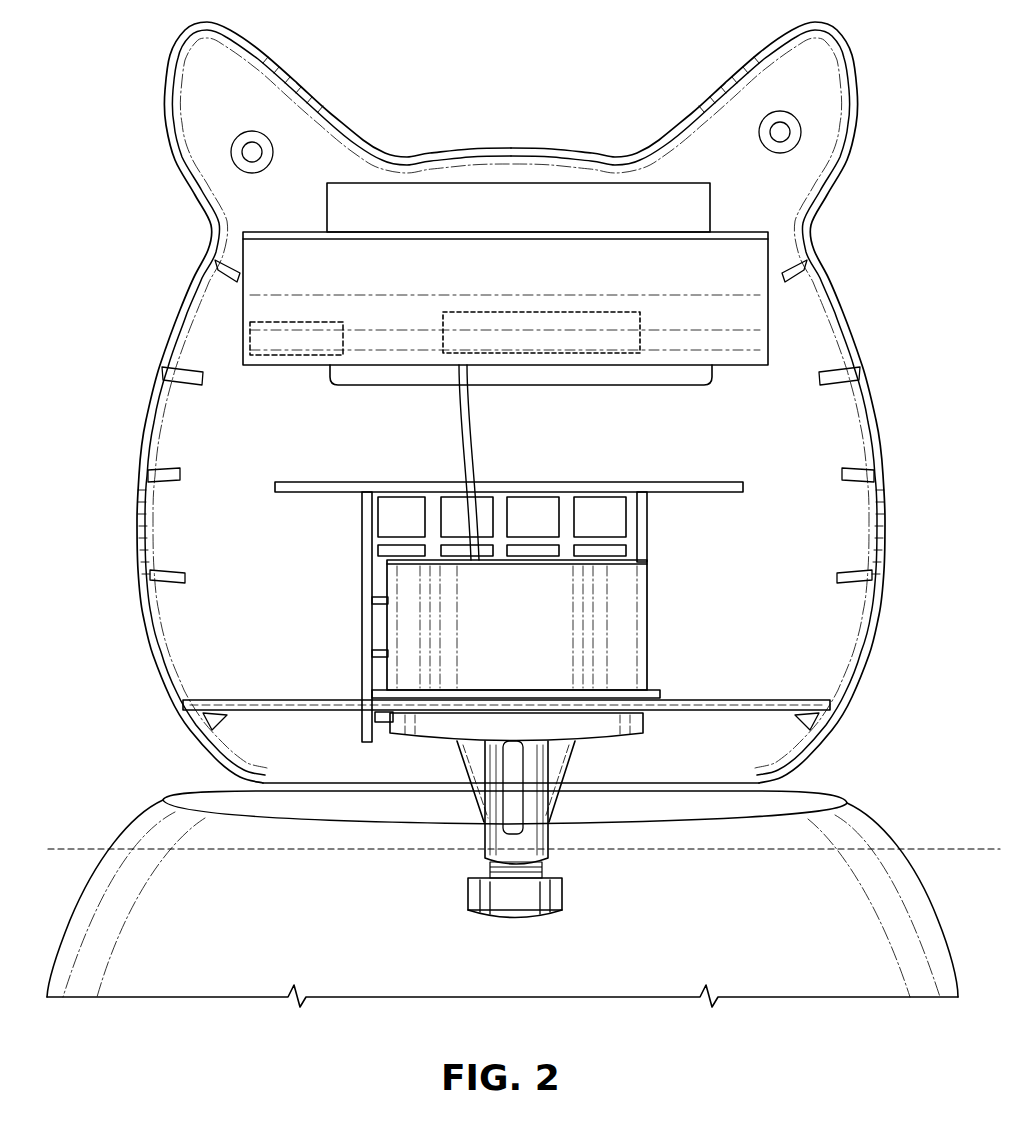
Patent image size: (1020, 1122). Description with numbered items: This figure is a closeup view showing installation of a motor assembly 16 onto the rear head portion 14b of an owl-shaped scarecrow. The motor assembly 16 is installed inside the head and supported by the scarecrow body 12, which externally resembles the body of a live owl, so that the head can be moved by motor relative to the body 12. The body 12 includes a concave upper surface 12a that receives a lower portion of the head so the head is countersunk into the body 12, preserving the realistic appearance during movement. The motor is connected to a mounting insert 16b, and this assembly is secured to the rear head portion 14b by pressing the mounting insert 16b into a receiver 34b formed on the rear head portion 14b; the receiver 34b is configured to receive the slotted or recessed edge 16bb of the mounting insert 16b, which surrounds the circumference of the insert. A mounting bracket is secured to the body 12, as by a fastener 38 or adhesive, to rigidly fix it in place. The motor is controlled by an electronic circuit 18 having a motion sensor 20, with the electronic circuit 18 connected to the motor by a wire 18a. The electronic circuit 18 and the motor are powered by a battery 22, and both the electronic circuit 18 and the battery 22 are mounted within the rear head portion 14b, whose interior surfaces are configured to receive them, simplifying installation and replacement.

The body 12 is at (688, 948).
The concave upper surface 12a is at (798, 810).
The rear head portion 14b is at (524, 146).
The motor assembly 16 is at (718, 581).
The mounting insert 16b is at (661, 692).
The recessed edge 16bb is at (393, 712).
The electronic circuit 18 is at (544, 277).
The wire 18a is at (464, 457).
The motion sensor 20 is at (547, 345).
The battery 22 is at (308, 353).
The receiver 34b is at (364, 700).
The fastener 38 is at (468, 892).